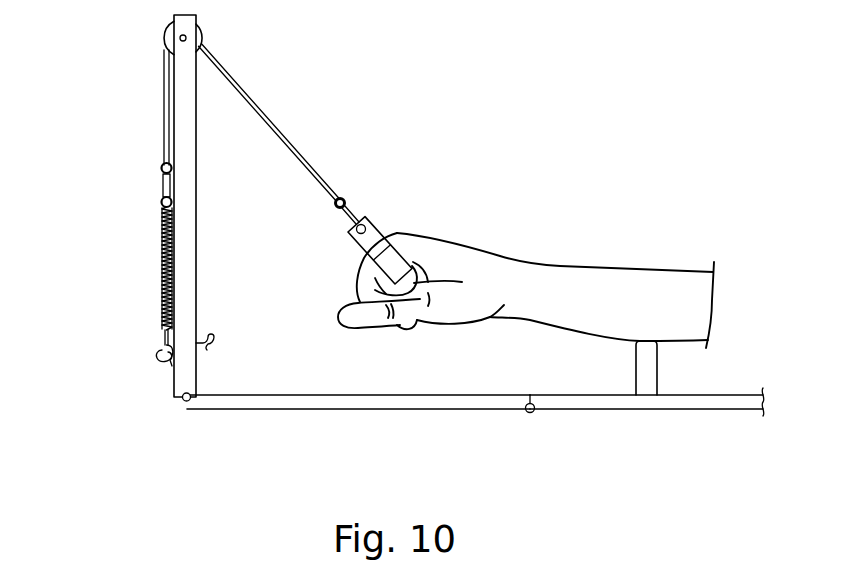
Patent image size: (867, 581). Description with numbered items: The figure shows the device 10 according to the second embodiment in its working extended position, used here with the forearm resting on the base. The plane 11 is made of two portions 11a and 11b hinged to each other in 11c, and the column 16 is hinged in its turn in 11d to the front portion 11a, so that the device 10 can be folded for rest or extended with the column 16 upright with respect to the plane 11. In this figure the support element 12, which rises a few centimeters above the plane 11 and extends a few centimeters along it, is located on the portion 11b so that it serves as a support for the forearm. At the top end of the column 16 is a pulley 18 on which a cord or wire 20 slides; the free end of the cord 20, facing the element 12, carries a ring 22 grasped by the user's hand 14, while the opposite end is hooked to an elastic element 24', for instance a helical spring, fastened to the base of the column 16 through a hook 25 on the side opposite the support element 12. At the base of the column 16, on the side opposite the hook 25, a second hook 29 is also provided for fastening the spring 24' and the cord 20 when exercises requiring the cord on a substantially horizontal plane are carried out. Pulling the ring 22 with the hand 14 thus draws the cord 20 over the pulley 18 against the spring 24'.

The device 10 is at (548, 192).
The plane 11 is at (394, 439).
The front portion 11a is at (325, 402).
The portion 11b is at (605, 403).
The hinge 11c is at (530, 412).
The hinge 11d is at (183, 400).
The support element 12 is at (650, 369).
The user's hand 14 is at (470, 224).
The column 16 is at (182, 97).
The pulley 18 is at (167, 29).
The cord or wire 20 is at (231, 76).
The ring 22 is at (385, 232).
The elastic element 24' is at (100, 268).
The hook 25 is at (158, 360).
The second hook 29 is at (212, 342).